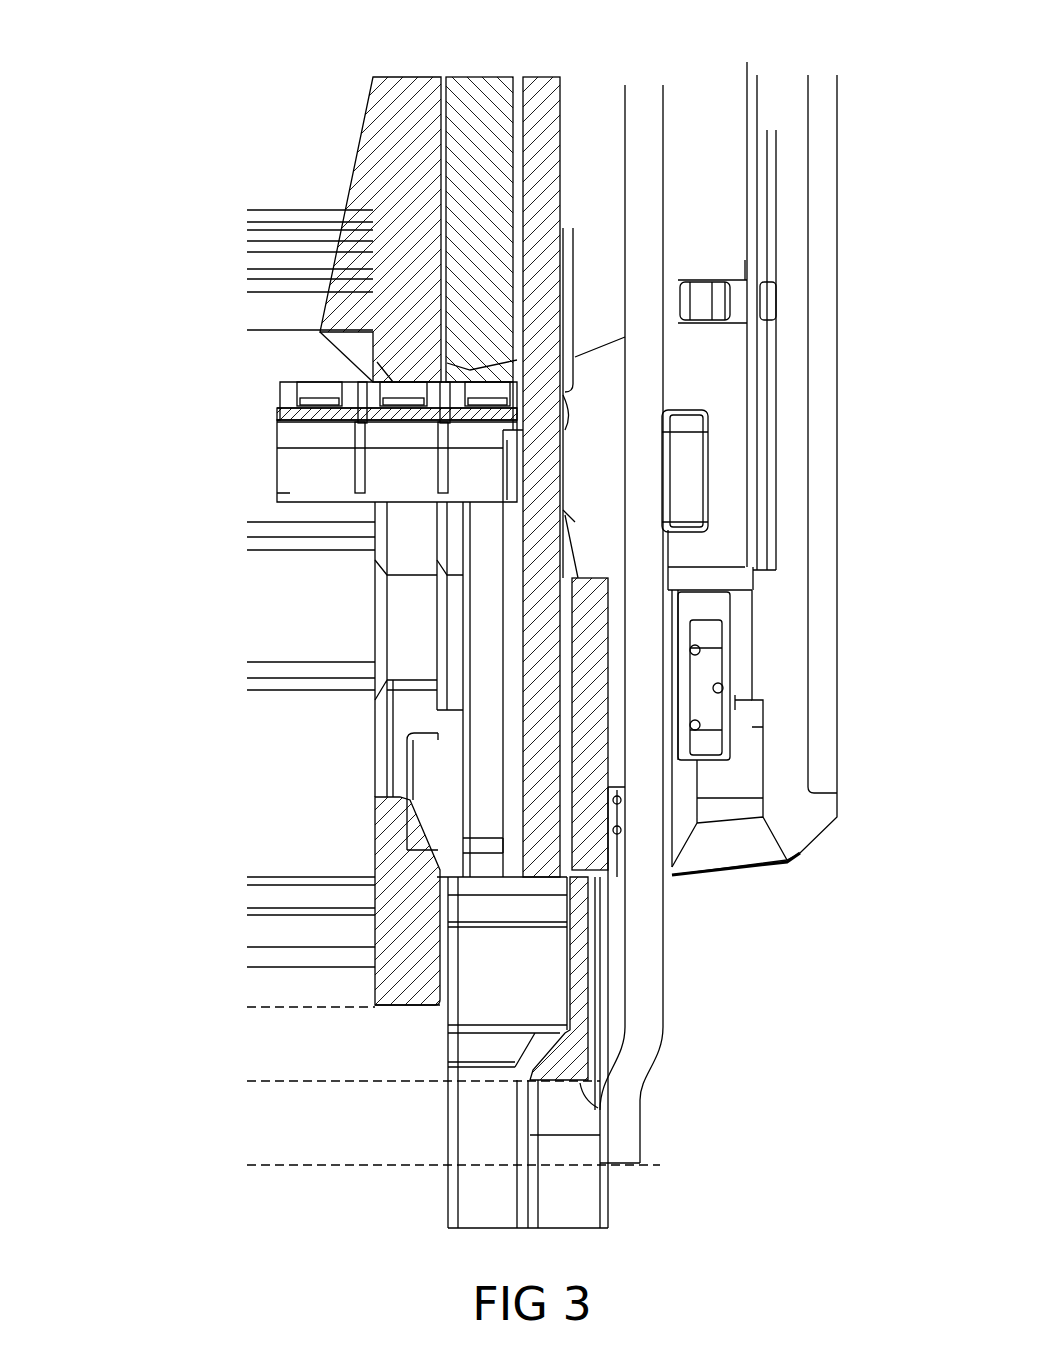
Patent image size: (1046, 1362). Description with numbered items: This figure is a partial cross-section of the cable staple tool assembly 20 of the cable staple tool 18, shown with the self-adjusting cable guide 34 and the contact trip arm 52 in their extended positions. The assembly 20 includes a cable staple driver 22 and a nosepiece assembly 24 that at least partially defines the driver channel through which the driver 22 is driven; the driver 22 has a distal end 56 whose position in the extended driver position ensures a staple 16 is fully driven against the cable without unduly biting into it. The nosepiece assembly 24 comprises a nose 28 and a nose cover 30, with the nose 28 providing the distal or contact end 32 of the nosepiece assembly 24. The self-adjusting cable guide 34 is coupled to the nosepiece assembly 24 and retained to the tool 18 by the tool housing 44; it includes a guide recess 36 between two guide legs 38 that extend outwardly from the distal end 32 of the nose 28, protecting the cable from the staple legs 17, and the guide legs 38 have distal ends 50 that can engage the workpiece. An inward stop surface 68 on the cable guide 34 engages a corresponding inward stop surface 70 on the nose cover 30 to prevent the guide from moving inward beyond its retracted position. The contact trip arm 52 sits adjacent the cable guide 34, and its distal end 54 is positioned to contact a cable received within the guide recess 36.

The cable staple tool 18 is at (135, 90).
The cable staple tool assembly 20 is at (325, 132).
The cable staple driver 22 is at (482, 100).
The tool housing 44 is at (590, 105).
The distal end of the driver 56 is at (470, 373).
The nose cover 30 is at (553, 537).
The guide legs 38 is at (588, 587).
The staple 16 is at (455, 576).
The staple legs 17 is at (483, 670).
The nose 28 is at (395, 842).
The nosepiece assembly 24 is at (318, 932).
The distal end of the nosepiece assembly 32 is at (407, 1007).
The inward stop surface of the nosepiece assembly 70 is at (543, 878).
The inward stop surface of the self-adjusting cable guide 68 is at (557, 1033).
The self-adjusting cable guide 34 is at (563, 1057).
The guide recess 36 is at (580, 1200).
The contact trip arm 52 is at (622, 1073).
The distal end of the contact trip arm 54 is at (620, 1167).
The distal ends of the guide legs 50 is at (575, 1230).